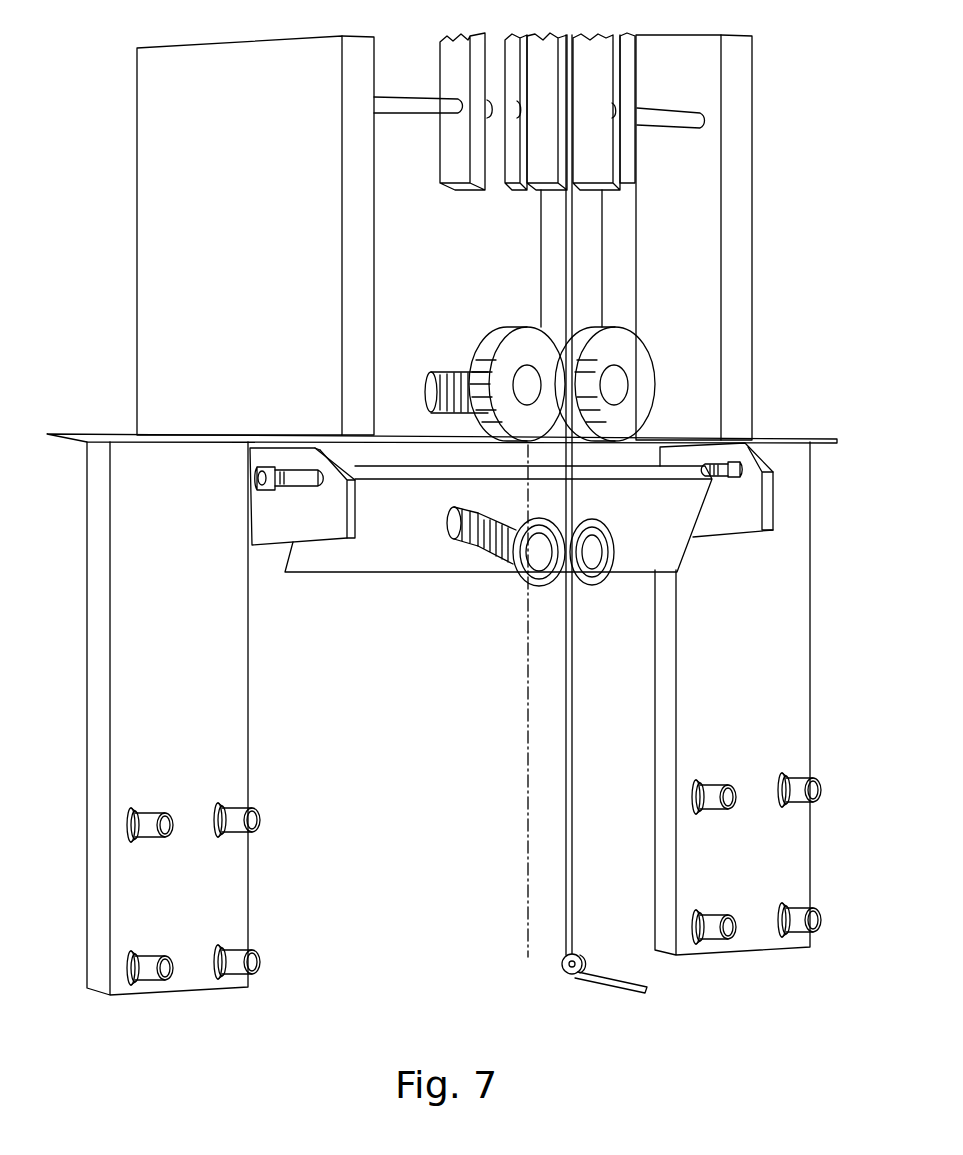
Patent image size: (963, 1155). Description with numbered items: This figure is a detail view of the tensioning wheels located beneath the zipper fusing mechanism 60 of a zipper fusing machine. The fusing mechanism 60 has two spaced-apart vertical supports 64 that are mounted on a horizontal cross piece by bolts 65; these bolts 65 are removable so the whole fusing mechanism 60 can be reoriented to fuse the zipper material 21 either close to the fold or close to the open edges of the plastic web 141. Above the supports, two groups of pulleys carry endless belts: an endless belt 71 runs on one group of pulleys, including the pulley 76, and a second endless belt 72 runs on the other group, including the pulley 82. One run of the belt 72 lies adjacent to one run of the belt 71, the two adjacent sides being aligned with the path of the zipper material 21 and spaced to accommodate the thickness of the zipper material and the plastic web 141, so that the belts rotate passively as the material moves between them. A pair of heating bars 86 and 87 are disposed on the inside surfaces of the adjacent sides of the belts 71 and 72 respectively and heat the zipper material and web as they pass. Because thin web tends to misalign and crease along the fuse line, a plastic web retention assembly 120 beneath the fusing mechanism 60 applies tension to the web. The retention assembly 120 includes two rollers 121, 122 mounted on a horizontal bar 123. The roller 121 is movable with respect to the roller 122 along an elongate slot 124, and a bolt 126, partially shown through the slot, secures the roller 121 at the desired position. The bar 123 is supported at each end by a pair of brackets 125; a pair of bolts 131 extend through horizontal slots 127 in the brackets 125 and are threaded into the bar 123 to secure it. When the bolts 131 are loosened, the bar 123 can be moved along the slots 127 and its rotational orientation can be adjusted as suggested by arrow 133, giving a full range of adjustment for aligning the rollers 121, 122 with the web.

The fusing mechanism 60 is at (697, 258).
The heating bar 87 is at (541, 178).
The heating bar 86 is at (590, 178).
The pulley 82 is at (528, 327).
The pulley 76 is at (648, 362).
The endless belt 72 is at (412, 437).
The endless belt 71 is at (790, 440).
The zipper material 21 is at (565, 857).
The plastic web 141 is at (527, 815).
The vertical support 64 is at (122, 712).
The bolt 65 is at (260, 957).
The plastic web retention assembly 120 is at (521, 511).
The bracket 125 is at (262, 545).
The arrow 133 is at (352, 493).
The horizontal bar 123 is at (690, 515).
The horizontal slot 127 is at (308, 468).
The bolt 131 is at (258, 478).
The bolt 126 is at (452, 537).
The elongate slot 124 is at (473, 537).
The roller 121 is at (519, 573).
The roller 122 is at (318, 497).